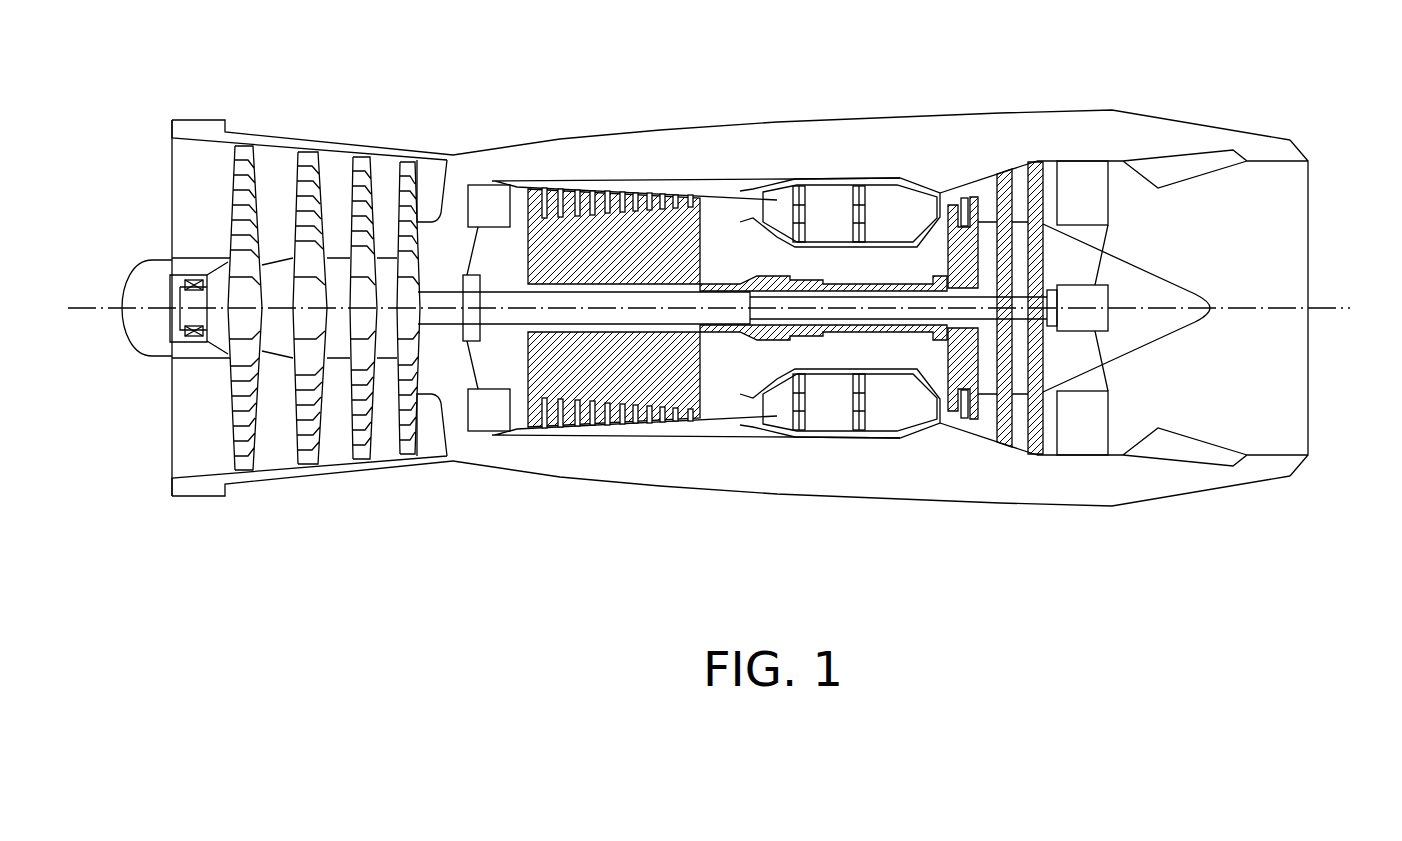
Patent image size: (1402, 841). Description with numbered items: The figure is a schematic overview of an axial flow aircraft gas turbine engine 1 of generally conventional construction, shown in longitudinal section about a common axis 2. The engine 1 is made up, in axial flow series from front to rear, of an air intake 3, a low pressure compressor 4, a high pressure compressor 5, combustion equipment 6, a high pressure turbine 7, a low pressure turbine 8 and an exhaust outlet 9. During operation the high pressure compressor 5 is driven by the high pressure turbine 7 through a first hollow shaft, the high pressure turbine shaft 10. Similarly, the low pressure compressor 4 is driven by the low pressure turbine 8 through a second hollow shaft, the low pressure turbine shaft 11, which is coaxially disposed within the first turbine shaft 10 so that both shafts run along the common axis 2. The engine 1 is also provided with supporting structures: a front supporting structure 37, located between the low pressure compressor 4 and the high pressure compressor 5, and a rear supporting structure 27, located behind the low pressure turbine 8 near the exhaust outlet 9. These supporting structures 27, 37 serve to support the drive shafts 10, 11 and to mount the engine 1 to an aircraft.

The axial flow aircraft gas turbine engine 1 is at (1168, 607).
The common axis 2 is at (90, 312).
The air intake 3 is at (195, 178).
The low pressure compressor 4 is at (338, 162).
The front supporting structure 37 is at (498, 195).
The high pressure compressor 5 is at (593, 193).
The combustion equipment 6 is at (887, 183).
The high pressure turbine 7 is at (973, 197).
The low pressure turbine 8 is at (1032, 165).
The rear supporting structure 27 is at (1087, 172).
The exhaust outlet 9 is at (1287, 197).
The high pressure turbine shaft 10 is at (720, 338).
The low pressure turbine shaft 11 is at (892, 315).